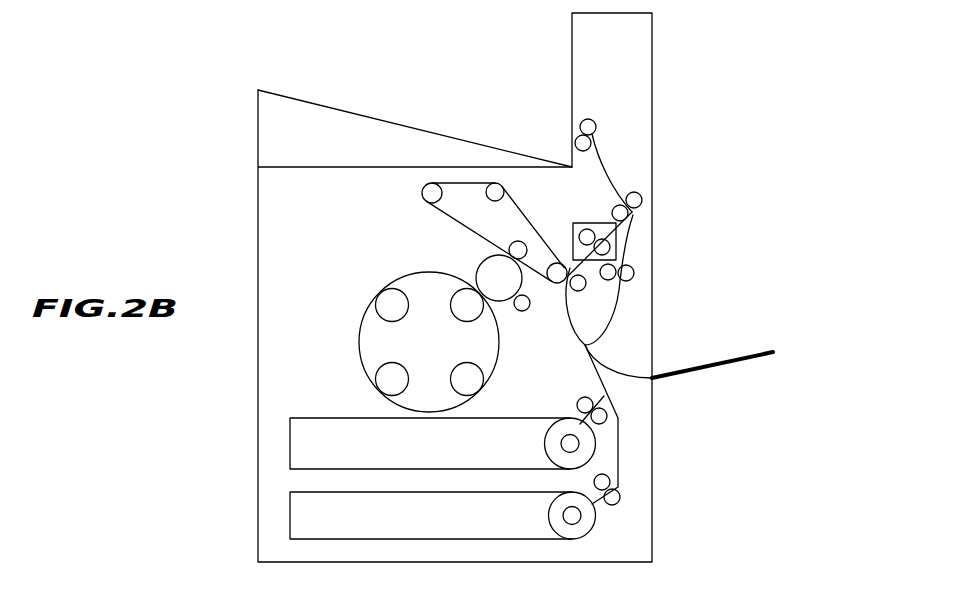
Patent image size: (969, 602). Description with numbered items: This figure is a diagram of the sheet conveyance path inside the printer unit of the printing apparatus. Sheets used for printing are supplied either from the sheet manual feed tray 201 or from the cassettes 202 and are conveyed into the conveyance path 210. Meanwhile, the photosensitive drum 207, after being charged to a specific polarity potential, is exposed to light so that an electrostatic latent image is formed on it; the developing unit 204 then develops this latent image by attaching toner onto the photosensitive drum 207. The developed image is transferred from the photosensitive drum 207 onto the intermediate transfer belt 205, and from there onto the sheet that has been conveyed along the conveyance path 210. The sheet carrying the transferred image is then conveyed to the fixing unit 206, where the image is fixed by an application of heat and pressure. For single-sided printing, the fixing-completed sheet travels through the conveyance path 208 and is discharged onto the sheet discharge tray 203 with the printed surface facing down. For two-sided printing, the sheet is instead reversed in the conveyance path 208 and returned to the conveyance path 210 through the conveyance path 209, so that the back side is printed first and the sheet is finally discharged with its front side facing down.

The sheet manual feed tray 201 is at (723, 360).
The cassettes 202 is at (297, 442).
The sheet discharge tray 203 is at (437, 132).
The developing unit 204 is at (359, 346).
The intermediate transfer belt 205 is at (422, 193).
The fixing unit 206 is at (572, 240).
The photosensitive drum 207 is at (484, 258).
The conveyance path 208 is at (605, 155).
The conveyance path 209 is at (618, 306).
The conveyance path 210 is at (563, 306).